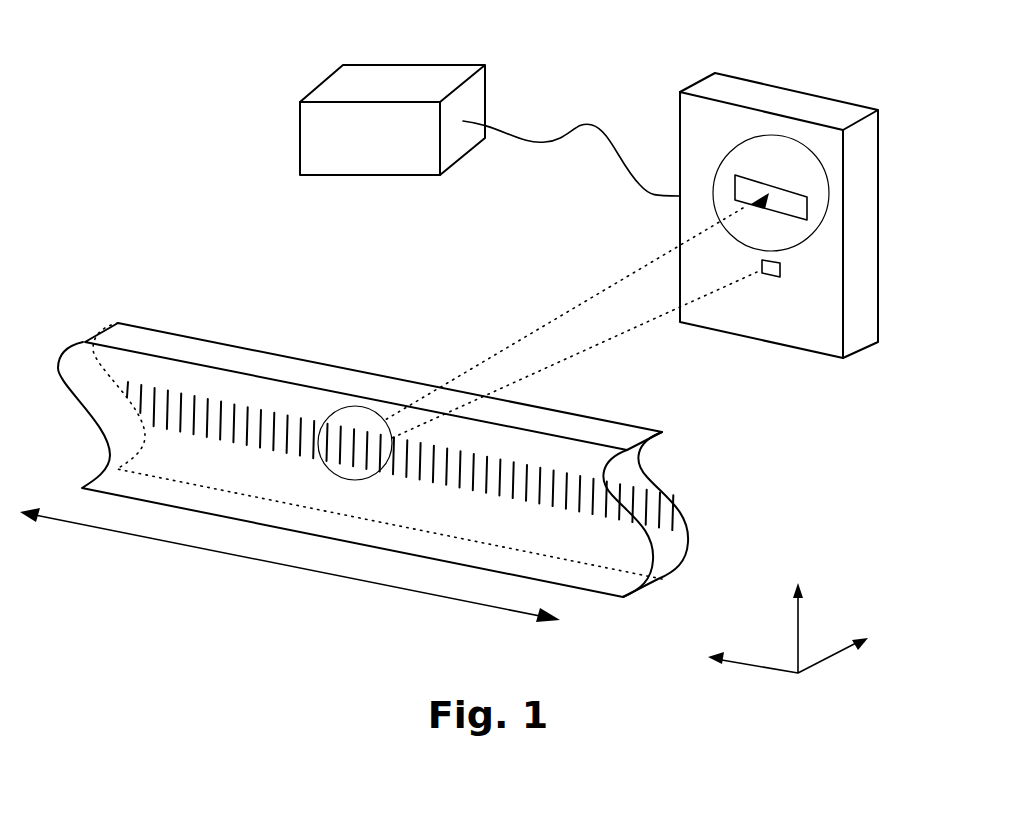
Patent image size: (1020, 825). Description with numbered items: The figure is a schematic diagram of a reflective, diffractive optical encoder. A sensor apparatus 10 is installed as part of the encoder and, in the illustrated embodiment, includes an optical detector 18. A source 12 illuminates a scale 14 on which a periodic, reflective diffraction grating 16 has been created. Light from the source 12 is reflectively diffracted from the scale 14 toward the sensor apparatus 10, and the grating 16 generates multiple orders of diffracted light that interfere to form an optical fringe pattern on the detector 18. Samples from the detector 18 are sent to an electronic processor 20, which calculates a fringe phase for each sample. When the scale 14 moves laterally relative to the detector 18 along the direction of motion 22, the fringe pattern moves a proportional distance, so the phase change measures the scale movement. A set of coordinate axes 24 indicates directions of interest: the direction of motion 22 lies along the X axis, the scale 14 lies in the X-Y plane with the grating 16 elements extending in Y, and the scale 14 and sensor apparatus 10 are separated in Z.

The sensor apparatus 10 is at (735, 92).
The source 12 is at (780, 267).
The scale 14 is at (172, 350).
The diffraction grating 16 is at (551, 452).
The optical detector 18 is at (803, 193).
The electronic processor 20 is at (445, 73).
The direction of motion 22 is at (200, 550).
The coordinate axes 24 is at (821, 710).